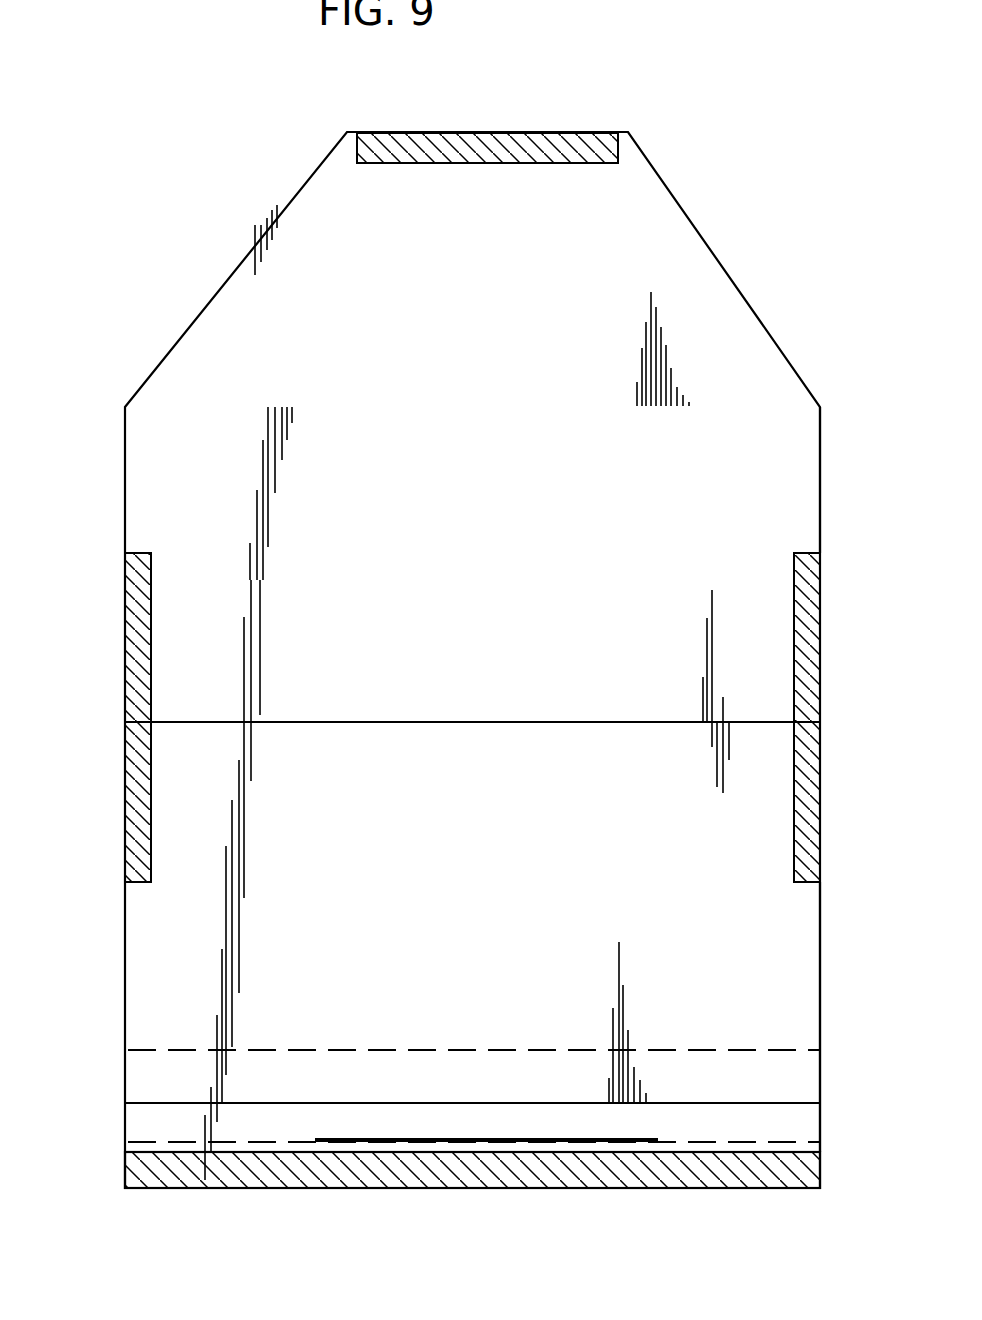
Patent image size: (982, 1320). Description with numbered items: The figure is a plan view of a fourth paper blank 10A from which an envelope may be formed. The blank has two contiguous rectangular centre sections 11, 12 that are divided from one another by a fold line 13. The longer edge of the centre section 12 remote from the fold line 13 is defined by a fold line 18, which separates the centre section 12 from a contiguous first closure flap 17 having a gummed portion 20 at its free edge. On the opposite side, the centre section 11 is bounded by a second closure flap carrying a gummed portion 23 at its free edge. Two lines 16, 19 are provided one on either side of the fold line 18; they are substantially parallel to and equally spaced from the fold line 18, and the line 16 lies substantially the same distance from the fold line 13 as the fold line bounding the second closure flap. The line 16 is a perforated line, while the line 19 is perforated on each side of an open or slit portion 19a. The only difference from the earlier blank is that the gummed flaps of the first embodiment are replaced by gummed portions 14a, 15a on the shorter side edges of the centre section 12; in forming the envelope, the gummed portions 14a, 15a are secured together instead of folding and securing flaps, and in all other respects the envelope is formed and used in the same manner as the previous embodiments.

The paper blank 10A is at (110, 442).
The gummed portion 23 is at (508, 146).
The centre section 11 is at (782, 538).
The gummed portion 15a is at (128, 630).
The gummed portion 14a is at (806, 698).
The fold line 13 is at (218, 723).
The centre section 12 is at (790, 988).
The perforated line 16 is at (760, 1051).
The fold line 18 is at (160, 1103).
The perforated line 19 is at (765, 1143).
The slit portion 19a is at (578, 1144).
The first closure flap 17 is at (380, 1127).
The gummed portion 20 is at (313, 1177).